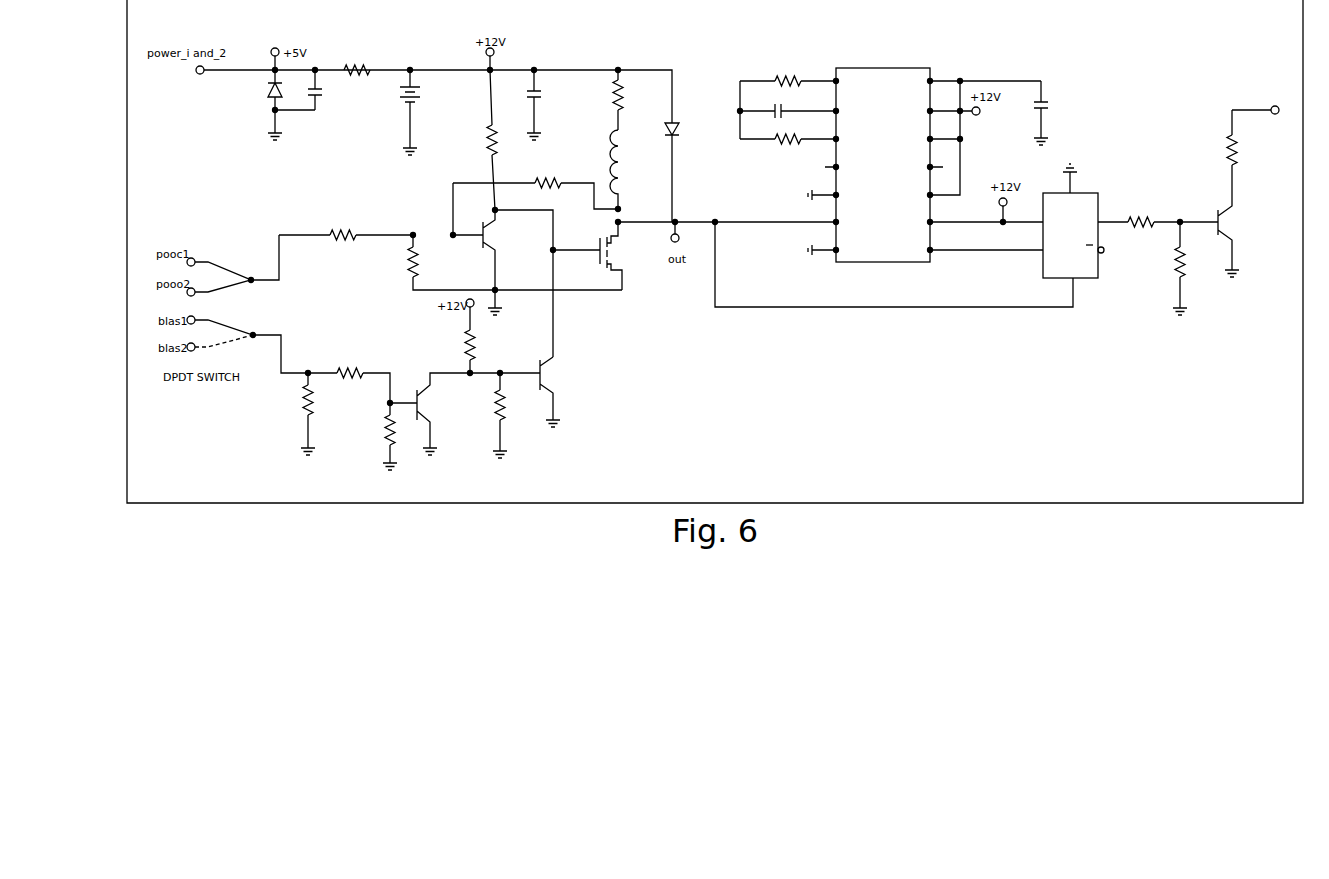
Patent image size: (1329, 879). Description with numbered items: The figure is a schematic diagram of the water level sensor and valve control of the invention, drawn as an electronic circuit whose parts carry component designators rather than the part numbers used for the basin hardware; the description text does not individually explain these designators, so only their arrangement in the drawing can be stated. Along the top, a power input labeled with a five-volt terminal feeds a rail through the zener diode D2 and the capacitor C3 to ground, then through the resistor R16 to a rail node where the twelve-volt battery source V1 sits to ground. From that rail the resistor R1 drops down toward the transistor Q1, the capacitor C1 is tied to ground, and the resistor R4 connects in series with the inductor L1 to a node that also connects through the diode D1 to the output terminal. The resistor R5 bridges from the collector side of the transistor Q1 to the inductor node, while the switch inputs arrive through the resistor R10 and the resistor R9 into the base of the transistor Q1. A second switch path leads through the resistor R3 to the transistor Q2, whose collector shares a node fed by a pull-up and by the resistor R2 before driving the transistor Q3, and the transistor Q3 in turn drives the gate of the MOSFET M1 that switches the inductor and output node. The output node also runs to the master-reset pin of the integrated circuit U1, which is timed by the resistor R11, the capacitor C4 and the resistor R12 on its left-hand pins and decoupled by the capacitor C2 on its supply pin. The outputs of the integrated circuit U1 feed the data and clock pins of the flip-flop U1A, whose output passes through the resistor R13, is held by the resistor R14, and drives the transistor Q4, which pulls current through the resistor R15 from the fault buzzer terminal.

The zener diode D02C25_1 D2 is at (256, 105).
The capacitor 1uf C3 is at (327, 92).
The resistor 810 R16 is at (357, 69).
The 12V battery source V1 is at (423, 112).
The resistor R1 is at (388, 262).
The capacitor 10uf C1 is at (548, 105).
The resistor 40 R4 is at (628, 100).
The inductor 10mH L1 is at (634, 169).
The diode D1N4001 D1 is at (698, 165).
The resistor 20K R5 is at (489, 314).
The transistor C2N3934 Q1 is at (500, 280).
The resistor 12K R10 is at (346, 236).
The resistor 2K R9 is at (507, 262).
The resistor R3 is at (404, 356).
The transistor Q2N3934 Q2 is at (465, 413).
The resistor 4.7K R2 is at (514, 415).
The transistor Q2N3934 Q3 is at (577, 392).
The MOSFET RFS20 M1 is at (587, 256).
The fault detection IC U1 is at (875, 171).
The resistor 10K R11 is at (787, 100).
The capacitor .01uf C4 is at (788, 106).
The resistor 20K R12 is at (788, 147).
The capacitor .1uf C2 is at (1053, 113).
The flip-flop CD40135 U1A is at (1094, 229).
The resistor 20K R13 is at (1173, 222).
The resistor 4.7K R14 is at (1194, 268).
The transistor Q2N2222A Q4 is at (1256, 221).
The resistor 100 R15 is at (1258, 126).